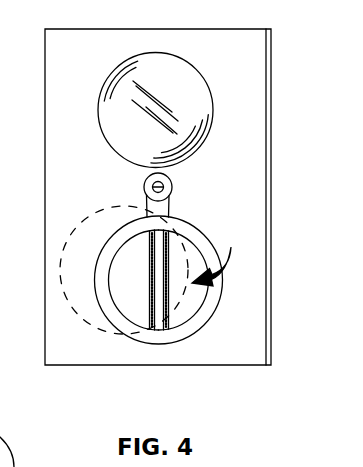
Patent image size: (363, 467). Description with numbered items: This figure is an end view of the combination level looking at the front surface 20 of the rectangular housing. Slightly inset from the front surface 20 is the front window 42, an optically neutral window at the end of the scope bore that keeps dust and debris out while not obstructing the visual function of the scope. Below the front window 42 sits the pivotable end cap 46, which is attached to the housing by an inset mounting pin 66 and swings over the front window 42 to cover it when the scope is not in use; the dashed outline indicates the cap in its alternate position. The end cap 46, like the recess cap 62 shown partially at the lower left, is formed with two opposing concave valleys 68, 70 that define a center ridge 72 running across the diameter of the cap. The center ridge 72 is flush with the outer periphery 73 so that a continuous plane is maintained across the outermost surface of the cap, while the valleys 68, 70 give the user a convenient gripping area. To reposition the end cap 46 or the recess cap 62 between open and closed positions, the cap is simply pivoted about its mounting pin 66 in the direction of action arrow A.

The front surface 20 is at (82, 70).
The front window 42 is at (182, 95).
The end cap 46 is at (107, 318).
The recess cap 62 is at (13, 465).
The mounting pin 66 is at (146, 187).
The concave valley 68 is at (138, 262).
The concave valley 70 is at (178, 257).
The center ridge 72 is at (157, 313).
The outer periphery 73 is at (196, 327).
The action arrow A is at (226, 260).